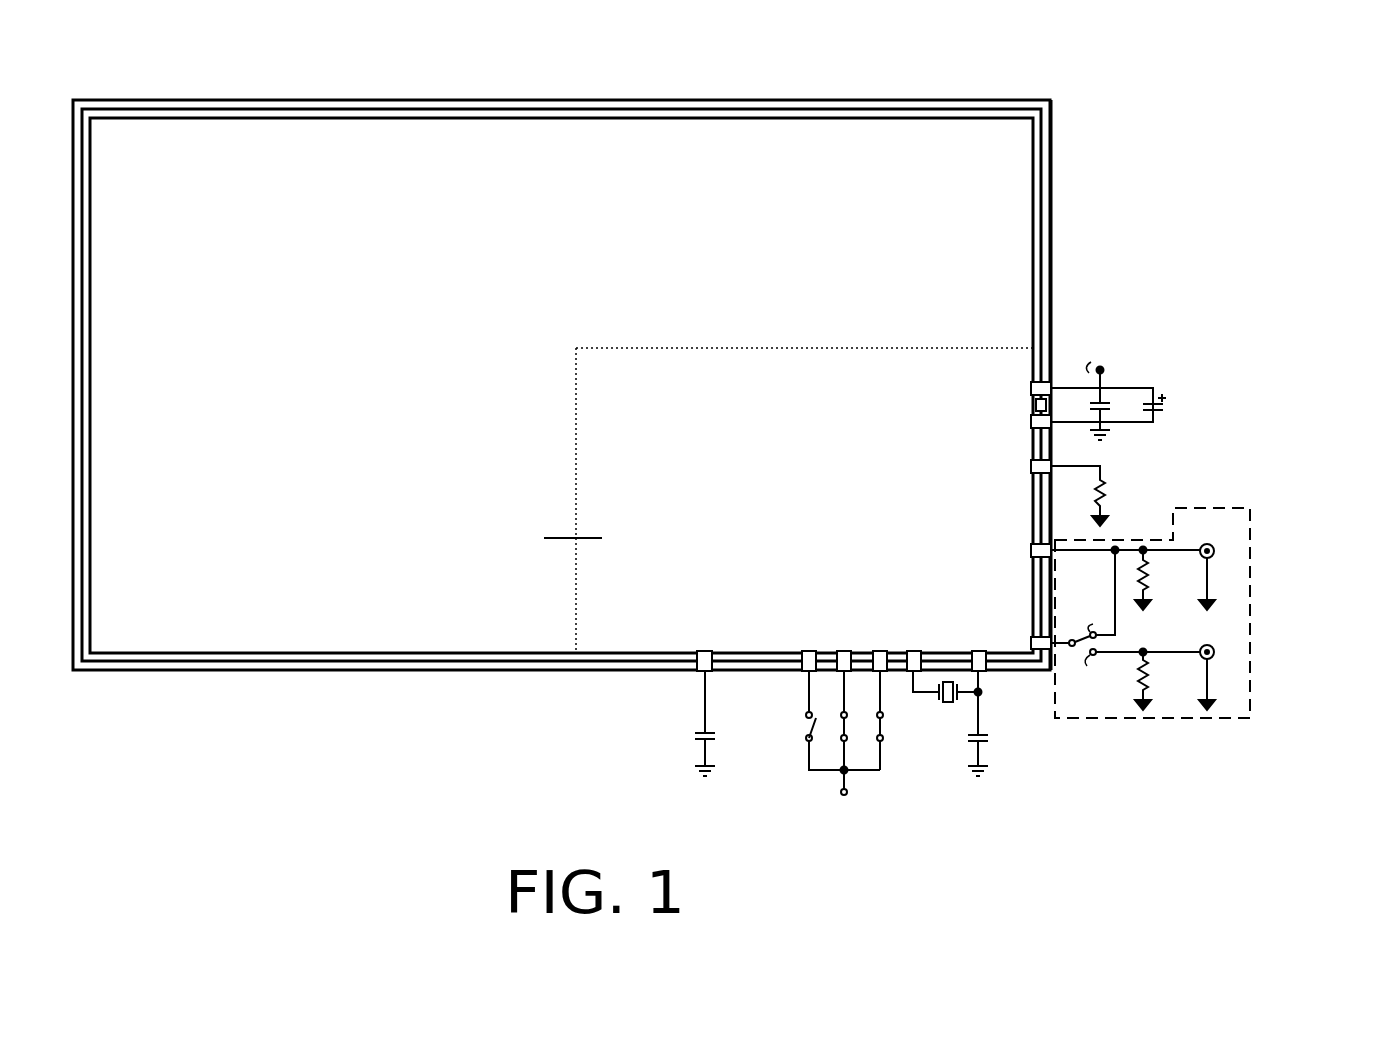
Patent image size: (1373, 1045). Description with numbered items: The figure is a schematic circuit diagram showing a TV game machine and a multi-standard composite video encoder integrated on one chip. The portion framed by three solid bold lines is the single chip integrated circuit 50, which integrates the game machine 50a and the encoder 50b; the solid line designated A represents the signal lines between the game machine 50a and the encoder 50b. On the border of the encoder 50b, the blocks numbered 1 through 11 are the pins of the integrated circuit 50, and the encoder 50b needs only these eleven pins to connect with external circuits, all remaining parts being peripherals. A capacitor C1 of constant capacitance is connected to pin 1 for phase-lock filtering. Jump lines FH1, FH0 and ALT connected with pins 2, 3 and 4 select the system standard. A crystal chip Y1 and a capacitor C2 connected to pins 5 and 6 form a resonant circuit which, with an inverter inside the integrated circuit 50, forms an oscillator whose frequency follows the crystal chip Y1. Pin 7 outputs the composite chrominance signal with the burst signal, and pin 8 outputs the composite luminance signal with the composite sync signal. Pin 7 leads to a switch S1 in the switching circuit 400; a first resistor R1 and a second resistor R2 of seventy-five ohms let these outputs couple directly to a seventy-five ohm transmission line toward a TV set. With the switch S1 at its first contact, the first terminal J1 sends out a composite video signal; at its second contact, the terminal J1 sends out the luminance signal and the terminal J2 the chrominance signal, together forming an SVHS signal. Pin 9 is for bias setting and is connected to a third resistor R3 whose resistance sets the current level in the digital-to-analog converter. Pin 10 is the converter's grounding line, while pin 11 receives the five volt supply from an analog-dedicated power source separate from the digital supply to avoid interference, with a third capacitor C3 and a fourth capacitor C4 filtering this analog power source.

The integrated circuit 50 is at (1128, 112).
The game machine 50a is at (489, 128).
The encoder 50b is at (995, 378).
The signal lines A is at (544, 538).
The pin 1 is at (705, 651).
The pin 2 is at (809, 651).
The pin 3 is at (844, 651).
The pin 4 is at (880, 651).
The pin 5 is at (913, 651).
The pin 6 is at (979, 651).
The pin 7 is at (1031, 643).
The pin 8 is at (1031, 551).
The pin 9 is at (1031, 466).
The pin 10 is at (1031, 422).
The pin 11 is at (1031, 389).
The switching circuit 400 is at (1175, 718).
The capacitor C1 is at (709, 742).
The capacitor C2 is at (994, 733).
The third capacitor C3 is at (1115, 405).
The fourth capacitor C4 is at (1157, 414).
The first resistor R1 is at (1143, 589).
The second resistor R2 is at (1143, 666).
The third resistor R3 is at (1100, 487).
The first terminal J1 is at (1212, 550).
The second terminal J2 is at (1213, 634).
The switch S1 is at (1071, 640).
The crystal chip Y1 is at (947, 704).
The jump line FH1 is at (821, 720).
The jump line FH0 is at (844, 715).
The jump line ALT is at (897, 706).